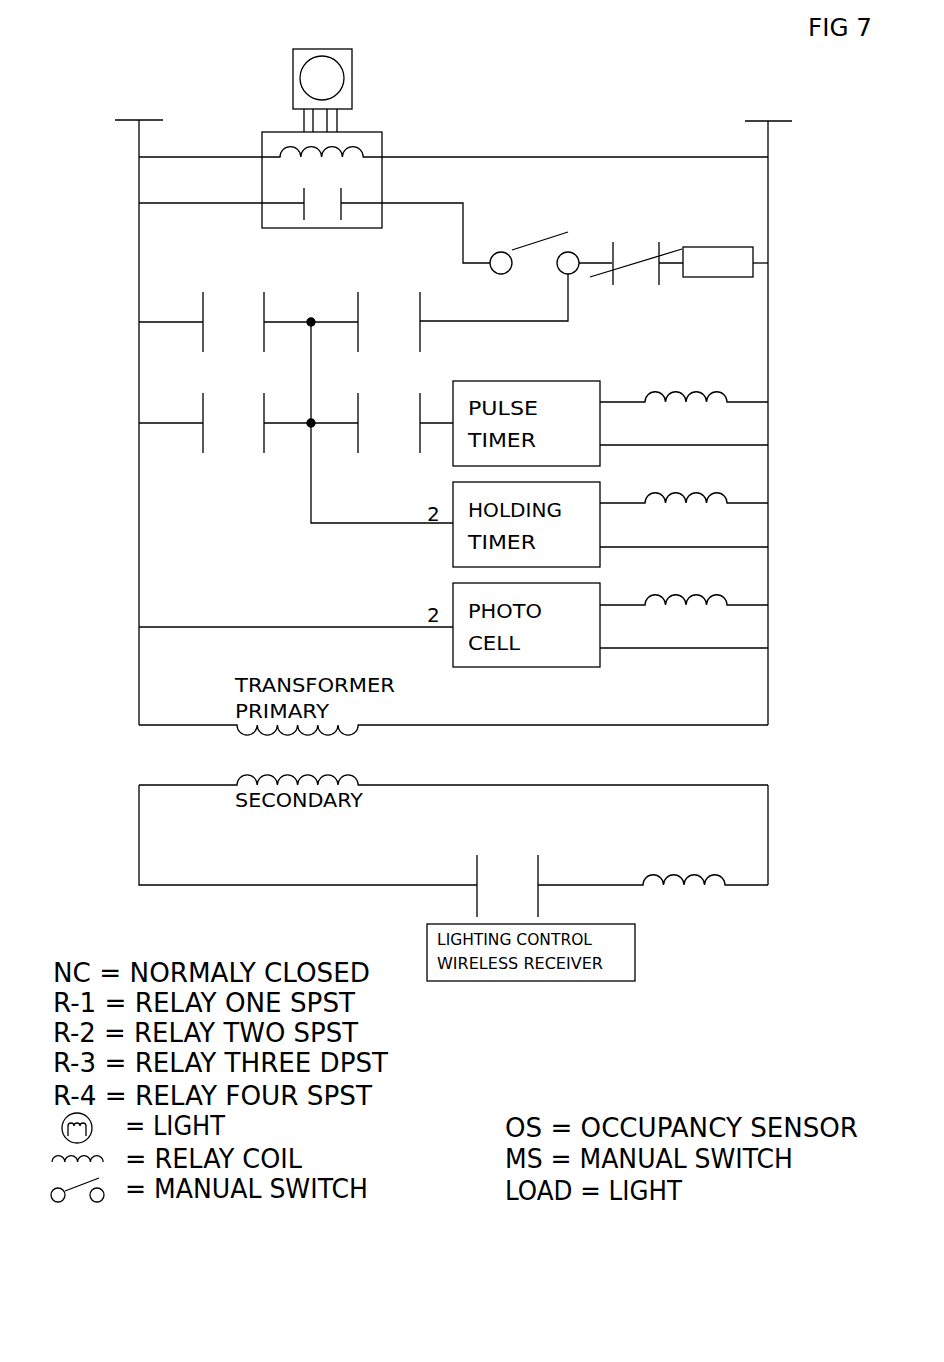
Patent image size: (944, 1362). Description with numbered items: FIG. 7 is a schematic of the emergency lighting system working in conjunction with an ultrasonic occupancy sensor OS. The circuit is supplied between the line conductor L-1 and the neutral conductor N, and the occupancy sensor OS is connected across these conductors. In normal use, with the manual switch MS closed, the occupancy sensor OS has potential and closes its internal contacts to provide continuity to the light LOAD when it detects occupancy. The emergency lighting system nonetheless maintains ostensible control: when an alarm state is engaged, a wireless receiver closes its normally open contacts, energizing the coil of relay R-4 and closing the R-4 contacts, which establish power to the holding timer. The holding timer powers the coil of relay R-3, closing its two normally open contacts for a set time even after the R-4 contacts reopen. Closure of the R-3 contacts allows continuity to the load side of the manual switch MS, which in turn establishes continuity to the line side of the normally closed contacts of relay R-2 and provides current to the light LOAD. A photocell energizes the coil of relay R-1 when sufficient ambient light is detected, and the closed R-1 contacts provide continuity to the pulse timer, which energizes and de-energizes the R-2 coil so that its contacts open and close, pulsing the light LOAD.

The line conductor L-1 is at (139, 402).
The neutral conductor N is at (768, 402).
The occupancy sensor OS is at (453, 156).
The manual switch MS is at (551, 253).
The R-1 relay R-1 is at (563, 520).
The R-2 relay R-2 is at (679, 343).
The R-3 relay R-3 is at (453, 401).
The R-4 relay R-4 is at (453, 570).
The light LOAD is at (725, 262).